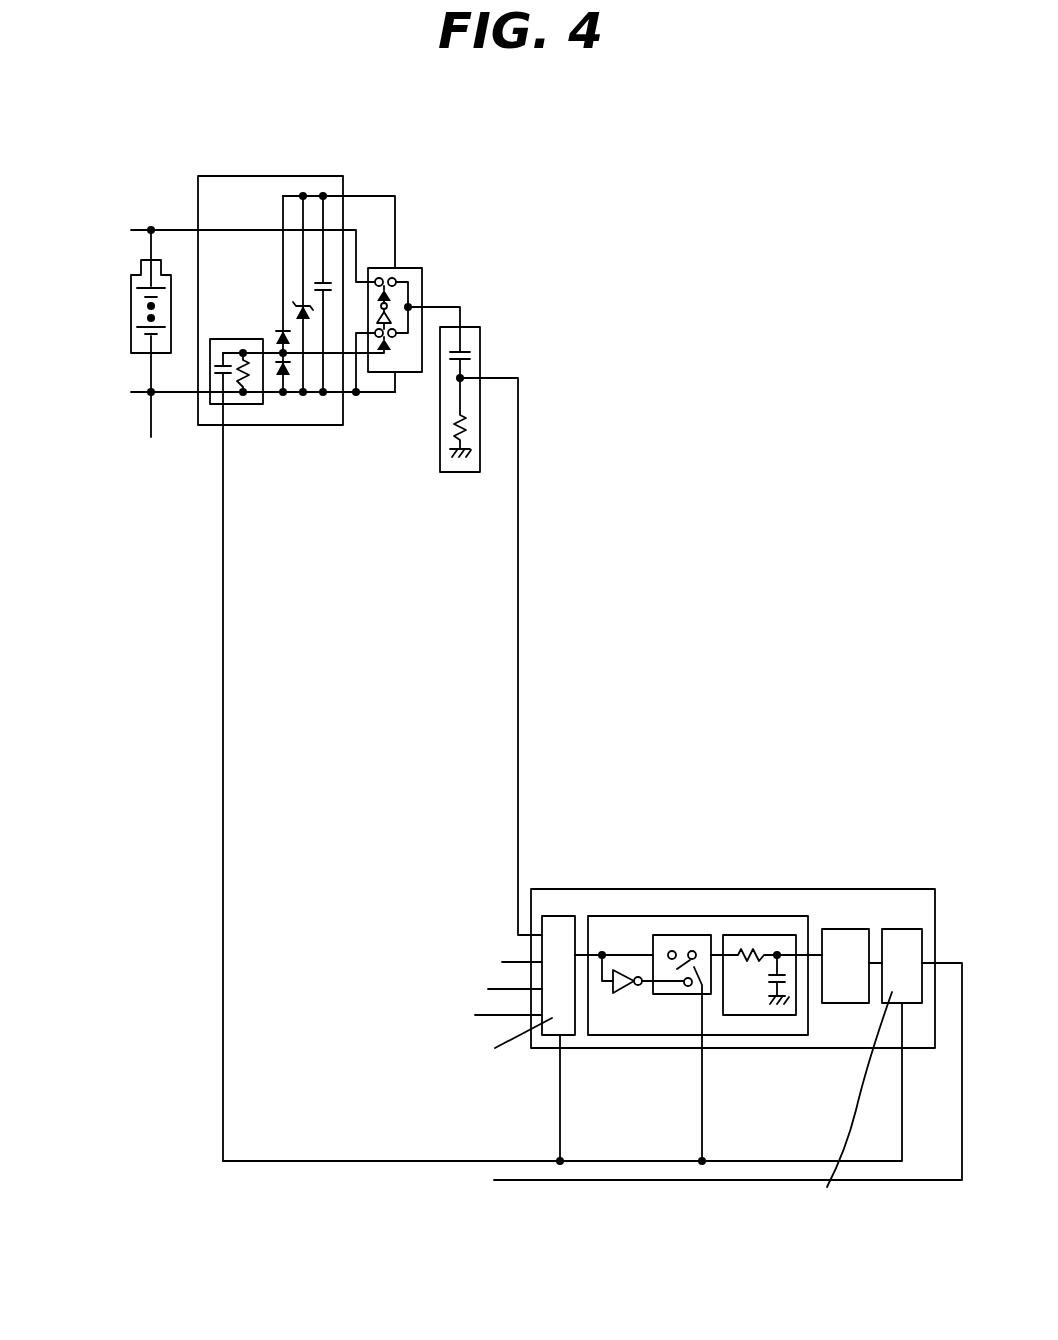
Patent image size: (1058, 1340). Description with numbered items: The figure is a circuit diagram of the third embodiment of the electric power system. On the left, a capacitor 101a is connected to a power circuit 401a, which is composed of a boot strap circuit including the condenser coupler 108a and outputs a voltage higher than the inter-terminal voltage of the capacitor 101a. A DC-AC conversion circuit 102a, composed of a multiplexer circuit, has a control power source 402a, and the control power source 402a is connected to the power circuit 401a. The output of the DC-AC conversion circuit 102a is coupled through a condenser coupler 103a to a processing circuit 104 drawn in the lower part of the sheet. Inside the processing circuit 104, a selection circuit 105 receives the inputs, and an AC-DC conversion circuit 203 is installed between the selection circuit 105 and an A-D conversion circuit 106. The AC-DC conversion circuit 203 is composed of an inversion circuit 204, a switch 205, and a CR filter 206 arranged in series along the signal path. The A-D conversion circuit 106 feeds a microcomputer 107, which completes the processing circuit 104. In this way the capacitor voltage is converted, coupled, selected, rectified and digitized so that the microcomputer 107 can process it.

The power circuit 401a is at (255, 177).
The control power source 402a is at (395, 221).
The capacitor 101a is at (131, 325).
The condenser coupler 108a is at (233, 339).
The DC-AC conversion circuit 102a is at (422, 286).
The condenser coupler 103a is at (480, 352).
The processing circuit 104 is at (548, 889).
The selection circuit 105 is at (572, 916).
The AC-DC conversion circuit 203 is at (636, 916).
The inversion circuit 204 is at (628, 993).
The switch 205 is at (673, 994).
The CR filter 206 is at (747, 1015).
The A-D conversion circuit 106 is at (840, 929).
The microcomputer 107 is at (903, 929).